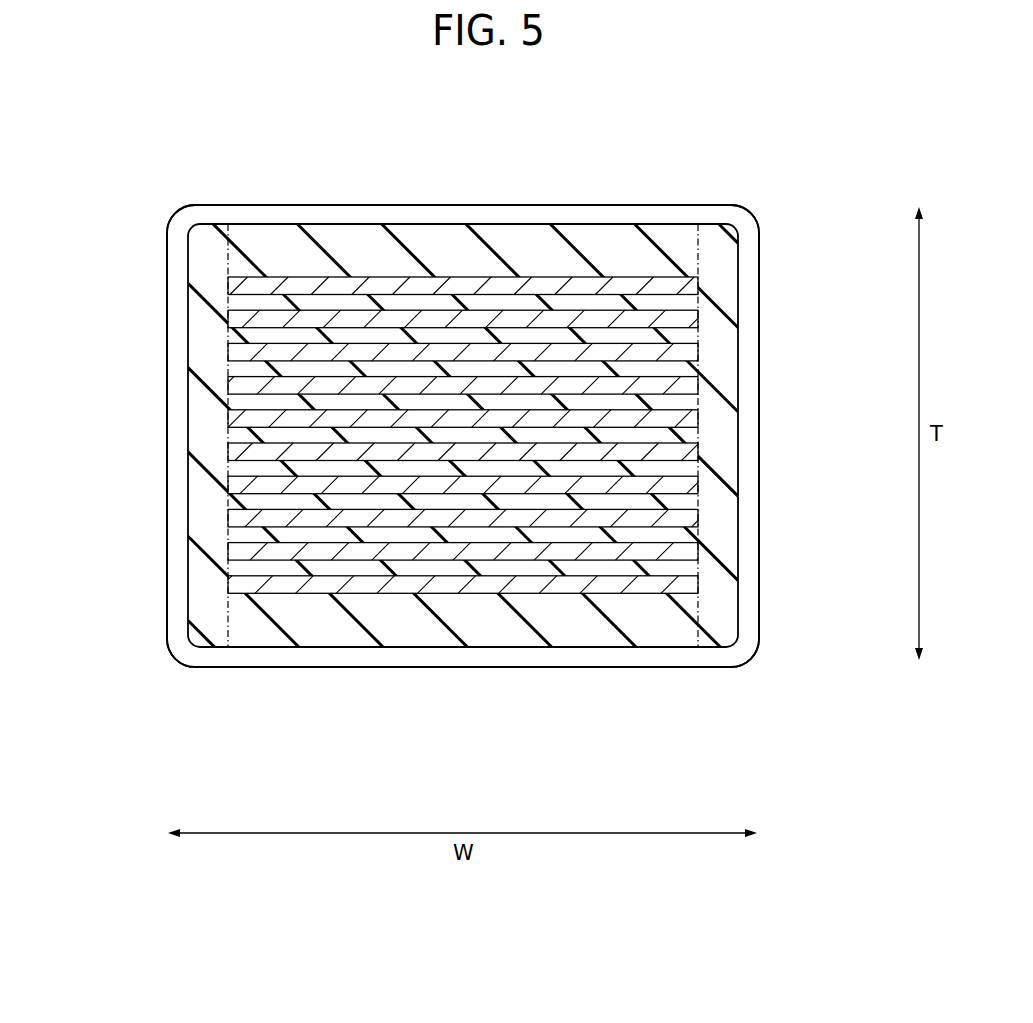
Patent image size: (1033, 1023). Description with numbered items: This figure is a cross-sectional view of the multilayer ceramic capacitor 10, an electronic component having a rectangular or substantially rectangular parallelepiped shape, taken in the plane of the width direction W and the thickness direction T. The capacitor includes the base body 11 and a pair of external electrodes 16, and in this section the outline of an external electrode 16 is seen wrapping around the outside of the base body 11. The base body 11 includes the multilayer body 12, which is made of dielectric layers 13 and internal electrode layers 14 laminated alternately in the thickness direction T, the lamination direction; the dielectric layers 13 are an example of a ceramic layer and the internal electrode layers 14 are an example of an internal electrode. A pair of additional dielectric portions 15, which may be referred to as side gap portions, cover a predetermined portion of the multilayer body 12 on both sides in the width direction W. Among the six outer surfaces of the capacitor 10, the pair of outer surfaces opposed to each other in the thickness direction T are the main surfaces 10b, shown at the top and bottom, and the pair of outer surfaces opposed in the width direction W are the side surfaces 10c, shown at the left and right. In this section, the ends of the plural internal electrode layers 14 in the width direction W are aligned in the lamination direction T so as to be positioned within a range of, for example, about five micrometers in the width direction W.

The multilayer ceramic capacitor 10 is at (740, 151).
The main surfaces 10b is at (261, 174).
The side surfaces 10c is at (147, 313).
The base body 11 is at (634, 202).
The multilayer body 12 is at (537, 160).
The dielectric layers 13 is at (437, 243).
The internal electrode layers 14 is at (517, 280).
The additional dielectric portions 15 is at (203, 438).
The external electrodes 16 is at (180, 535).